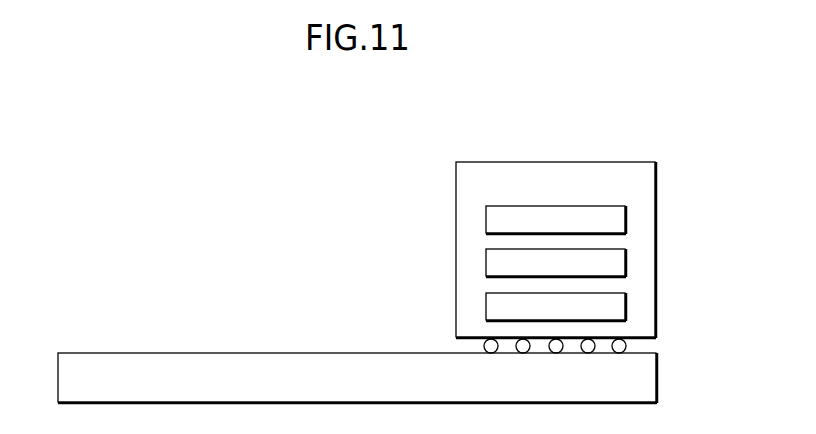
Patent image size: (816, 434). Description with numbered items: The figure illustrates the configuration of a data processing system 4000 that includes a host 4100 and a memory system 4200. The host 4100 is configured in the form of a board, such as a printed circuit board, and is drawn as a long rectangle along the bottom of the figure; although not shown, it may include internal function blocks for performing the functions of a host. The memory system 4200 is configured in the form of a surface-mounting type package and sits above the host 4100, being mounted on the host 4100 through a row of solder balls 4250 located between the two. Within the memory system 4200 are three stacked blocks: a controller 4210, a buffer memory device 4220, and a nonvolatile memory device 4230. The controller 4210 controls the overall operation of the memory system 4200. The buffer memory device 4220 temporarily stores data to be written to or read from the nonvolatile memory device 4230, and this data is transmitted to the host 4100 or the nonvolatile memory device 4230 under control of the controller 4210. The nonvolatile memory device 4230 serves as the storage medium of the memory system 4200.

The data processing system 4000 is at (137, 135).
The host 4100 is at (357, 378).
The memory system 4200 is at (556, 250).
The controller 4210 is at (556, 220).
The buffer memory device 4220 is at (556, 263).
The nonvolatile memory device 4230 is at (556, 307).
The solder balls 4250 is at (635, 344).